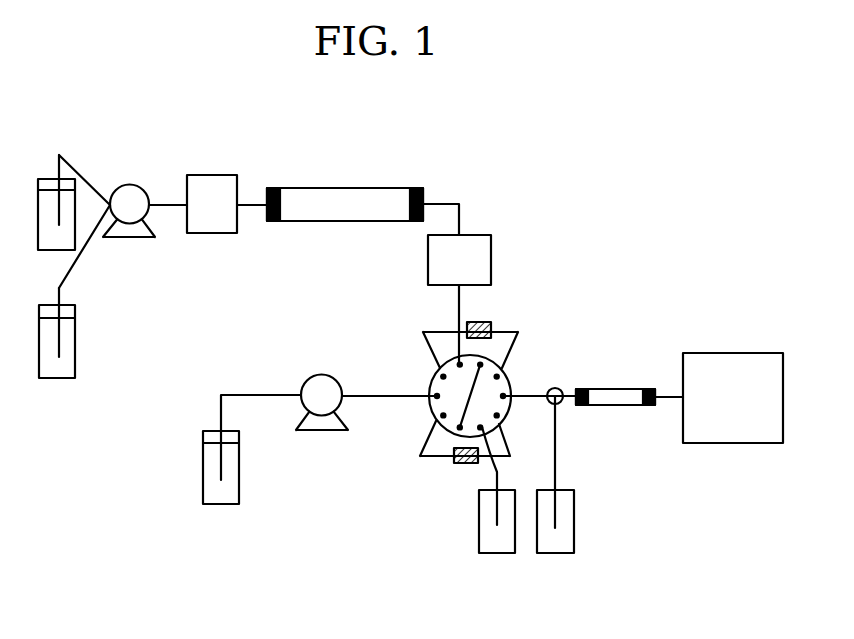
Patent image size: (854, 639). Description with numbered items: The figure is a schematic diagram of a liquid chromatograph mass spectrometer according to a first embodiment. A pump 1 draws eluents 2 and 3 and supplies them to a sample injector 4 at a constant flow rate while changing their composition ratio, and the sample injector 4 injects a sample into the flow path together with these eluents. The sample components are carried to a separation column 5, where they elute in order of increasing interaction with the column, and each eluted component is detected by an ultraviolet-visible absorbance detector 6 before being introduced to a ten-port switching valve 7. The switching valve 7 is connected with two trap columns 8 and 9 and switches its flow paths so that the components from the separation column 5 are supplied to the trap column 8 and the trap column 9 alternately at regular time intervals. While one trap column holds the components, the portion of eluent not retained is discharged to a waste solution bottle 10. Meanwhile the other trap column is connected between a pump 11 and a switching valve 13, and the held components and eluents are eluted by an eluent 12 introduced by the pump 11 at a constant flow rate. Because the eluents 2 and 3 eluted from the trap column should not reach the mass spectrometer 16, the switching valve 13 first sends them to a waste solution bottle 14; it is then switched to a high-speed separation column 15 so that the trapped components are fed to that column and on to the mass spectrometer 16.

The pump 1 is at (130, 183).
The eluent 2 is at (50, 178).
The eluent 3 is at (52, 378).
The sample injector 4 is at (216, 175).
The separation column 5 is at (344, 188).
The ultraviolet-visible absorbance detector 6 is at (468, 235).
The 10-port switching valve 7 is at (433, 378).
The trap column 8 is at (487, 321).
The trap column 9 is at (455, 463).
The waste solution bottle 10 is at (493, 553).
The pump 11 is at (312, 430).
The eluent 12 is at (215, 505).
The switching valve 13 is at (556, 388).
The waste solution bottle 14 is at (555, 553).
The high-speed separation column 15 is at (612, 389).
The mass spectrometer 16 is at (722, 353).